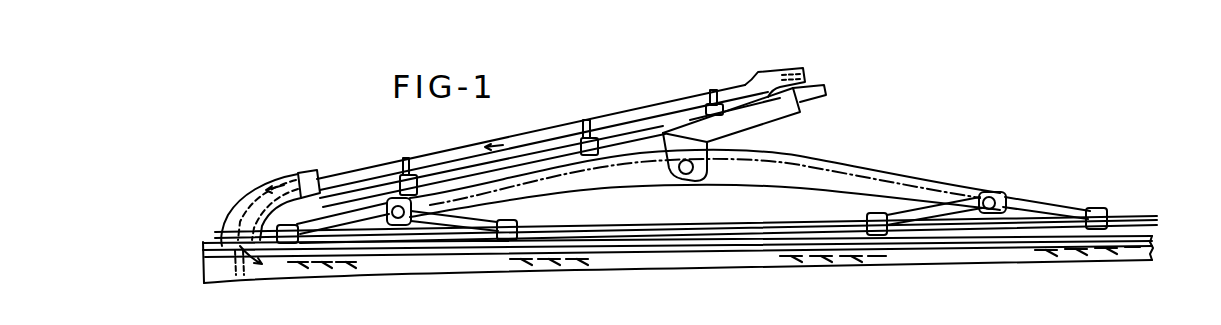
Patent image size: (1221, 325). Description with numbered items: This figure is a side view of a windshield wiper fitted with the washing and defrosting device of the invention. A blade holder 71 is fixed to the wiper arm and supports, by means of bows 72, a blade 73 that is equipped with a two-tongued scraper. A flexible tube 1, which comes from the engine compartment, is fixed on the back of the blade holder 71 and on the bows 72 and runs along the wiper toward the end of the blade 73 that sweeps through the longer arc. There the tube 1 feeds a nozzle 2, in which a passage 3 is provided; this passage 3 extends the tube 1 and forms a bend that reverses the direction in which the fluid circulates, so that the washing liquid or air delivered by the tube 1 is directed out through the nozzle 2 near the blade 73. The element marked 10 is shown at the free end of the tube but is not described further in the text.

The flexible tube 1 is at (366, 169).
The nozzle 2 is at (223, 220).
The passage 3 is at (218, 233).
The fluid hose 10 is at (828, 93).
The blade holder 71 is at (919, 173).
The bows 72 is at (516, 224).
The blade 73 is at (472, 290).